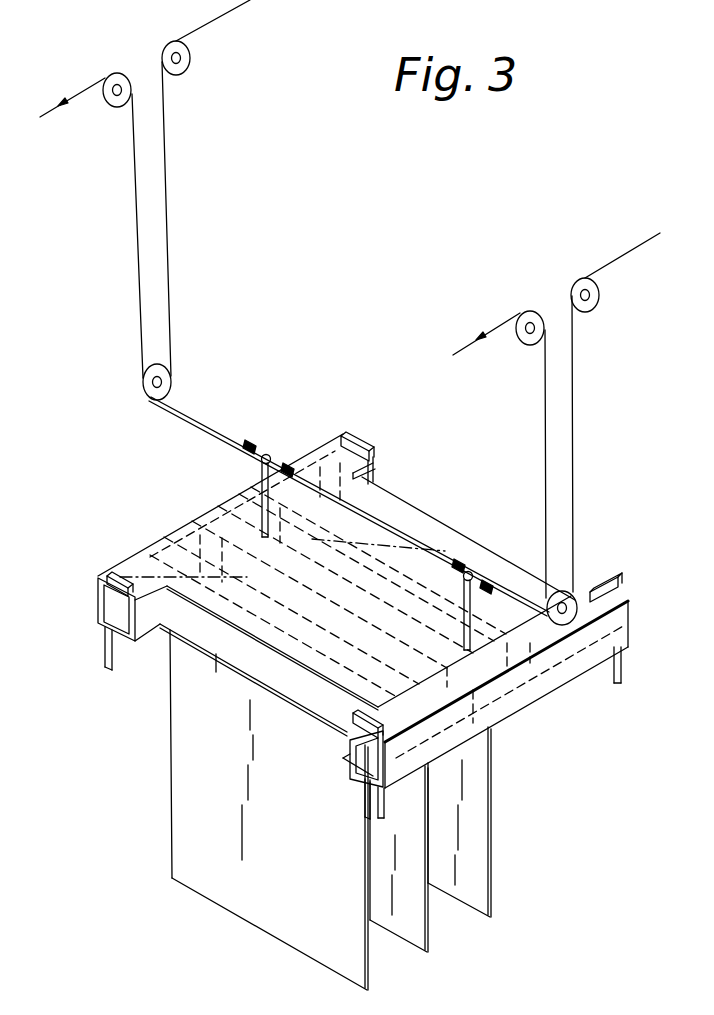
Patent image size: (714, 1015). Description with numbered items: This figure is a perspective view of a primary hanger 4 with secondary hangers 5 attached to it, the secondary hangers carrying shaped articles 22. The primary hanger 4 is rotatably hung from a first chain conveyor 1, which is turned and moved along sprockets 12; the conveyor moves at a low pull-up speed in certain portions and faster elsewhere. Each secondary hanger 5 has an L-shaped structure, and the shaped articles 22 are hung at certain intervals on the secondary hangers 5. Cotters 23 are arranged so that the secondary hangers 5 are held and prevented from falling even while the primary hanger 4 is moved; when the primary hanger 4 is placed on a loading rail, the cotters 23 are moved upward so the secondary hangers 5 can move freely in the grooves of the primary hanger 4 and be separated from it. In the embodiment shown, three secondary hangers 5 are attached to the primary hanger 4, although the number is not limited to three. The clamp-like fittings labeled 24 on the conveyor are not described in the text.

The first chain conveyor 1 is at (166, 232).
The sprocket 12 is at (172, 377).
The primary hanger 4 is at (580, 675).
The secondary hanger 5 is at (533, 657).
The cotter 23 is at (606, 578).
The clamp 24 is at (286, 464).
The shaped article 22 is at (494, 866).